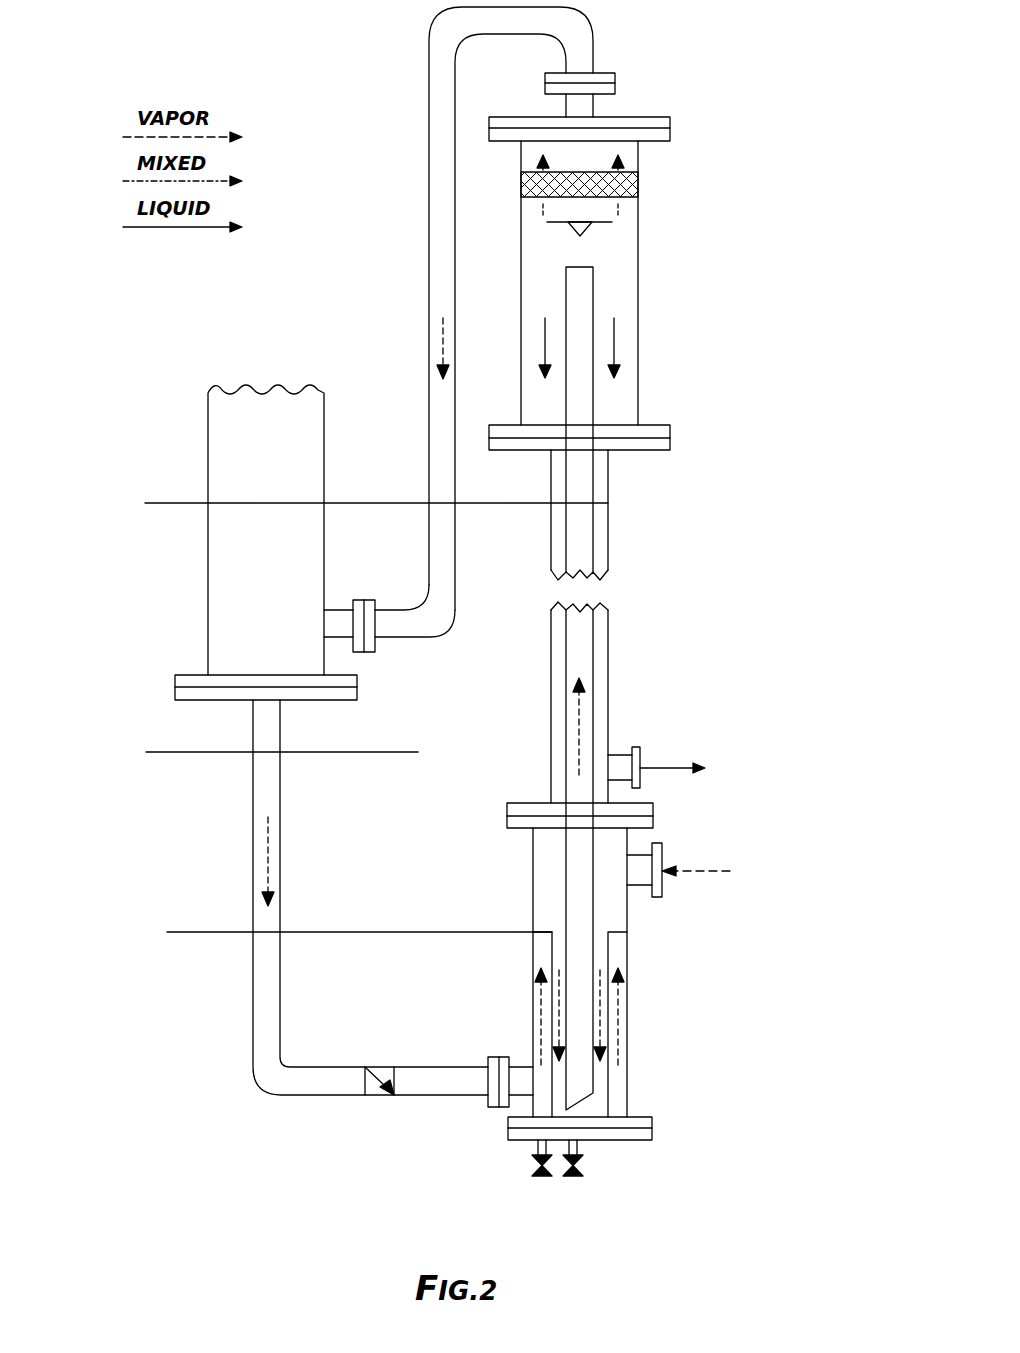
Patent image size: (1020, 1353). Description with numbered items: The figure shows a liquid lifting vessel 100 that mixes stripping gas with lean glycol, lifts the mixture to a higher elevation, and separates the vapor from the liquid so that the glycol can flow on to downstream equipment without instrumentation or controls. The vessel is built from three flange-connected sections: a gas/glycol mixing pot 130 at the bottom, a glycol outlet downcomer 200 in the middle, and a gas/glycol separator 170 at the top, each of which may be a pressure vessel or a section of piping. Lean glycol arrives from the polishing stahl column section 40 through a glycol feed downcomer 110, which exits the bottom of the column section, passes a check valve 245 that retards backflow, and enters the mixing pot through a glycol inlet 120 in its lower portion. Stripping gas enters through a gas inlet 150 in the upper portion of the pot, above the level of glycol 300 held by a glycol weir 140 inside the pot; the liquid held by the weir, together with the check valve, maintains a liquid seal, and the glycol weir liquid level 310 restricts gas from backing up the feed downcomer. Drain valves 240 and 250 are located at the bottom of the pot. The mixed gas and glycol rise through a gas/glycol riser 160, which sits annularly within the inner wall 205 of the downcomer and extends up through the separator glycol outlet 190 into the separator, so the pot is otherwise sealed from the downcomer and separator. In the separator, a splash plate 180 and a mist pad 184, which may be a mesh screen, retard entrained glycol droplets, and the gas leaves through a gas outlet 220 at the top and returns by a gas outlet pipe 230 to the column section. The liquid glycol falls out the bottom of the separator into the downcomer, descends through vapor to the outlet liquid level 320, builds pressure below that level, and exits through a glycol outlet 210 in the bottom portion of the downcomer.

The polishing stahl column section 40 is at (208, 412).
The liquid lifting vessel 100 is at (608, 487).
The glycol feed downcomer 110 is at (251, 848).
The glycol inlet 120 is at (494, 1057).
The gas/glycol mixing pot 130 is at (627, 1083).
The glycol weir 140 is at (627, 953).
The gas inlet 150 is at (662, 853).
The gas/glycol riser 160 is at (593, 653).
The gas/glycol separator 170 is at (638, 300).
The splash plate 180 is at (608, 226).
The mist pad 184 is at (638, 180).
The separator glycol outlet 190 is at (608, 452).
The glycol outlet downcomer 200 is at (608, 532).
The inner wall 205 is at (608, 627).
The glycol outlet 210 is at (640, 757).
The gas outlet 220 is at (615, 90).
The gas outlet pipe 230 is at (429, 297).
The drain valve 240 is at (540, 1168).
The check valve 245 is at (378, 1067).
The drain valve 250 is at (578, 1170).
The level of glycol 300 is at (195, 933).
The glycol weir liquid level 310 is at (190, 752).
The outlet liquid level 320 is at (233, 506).